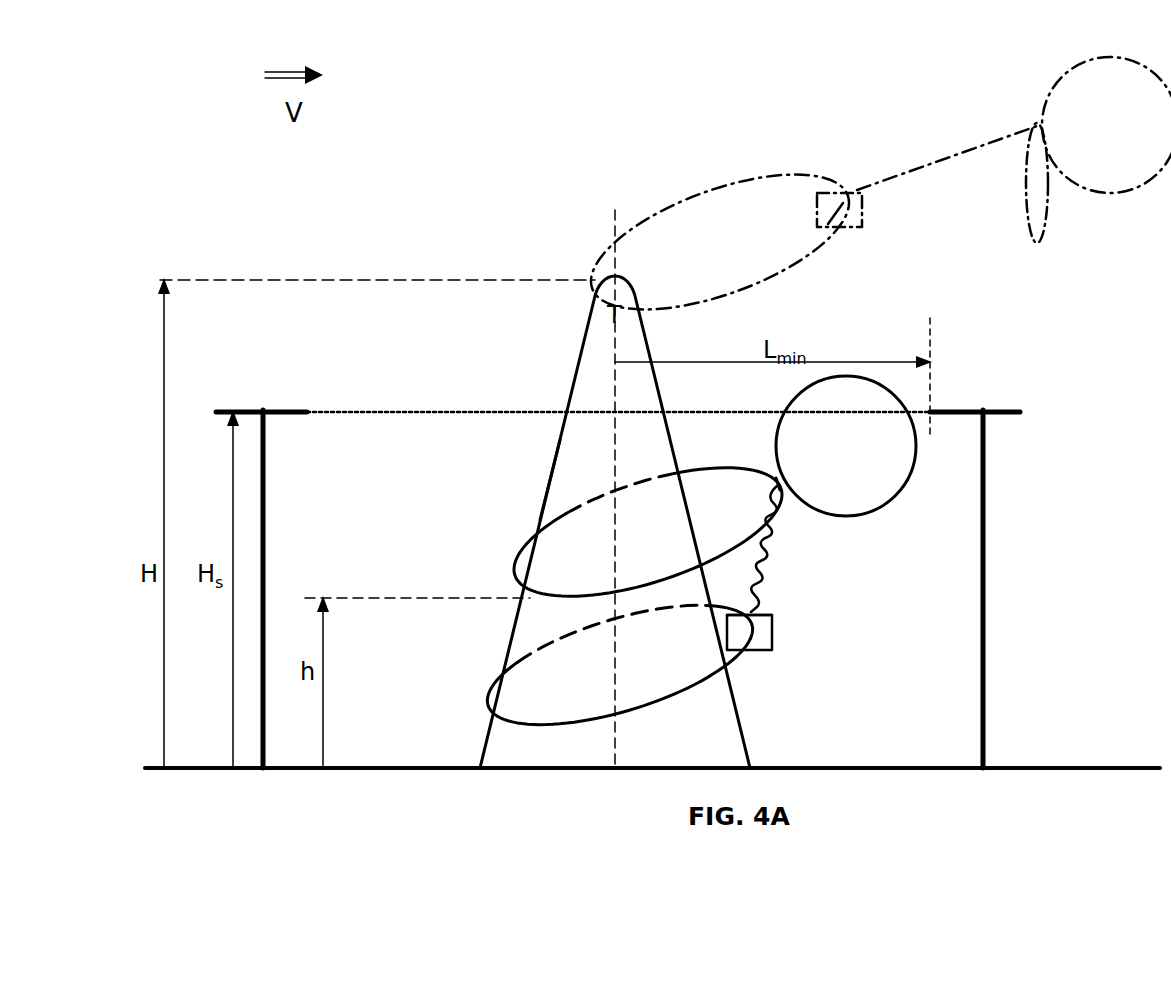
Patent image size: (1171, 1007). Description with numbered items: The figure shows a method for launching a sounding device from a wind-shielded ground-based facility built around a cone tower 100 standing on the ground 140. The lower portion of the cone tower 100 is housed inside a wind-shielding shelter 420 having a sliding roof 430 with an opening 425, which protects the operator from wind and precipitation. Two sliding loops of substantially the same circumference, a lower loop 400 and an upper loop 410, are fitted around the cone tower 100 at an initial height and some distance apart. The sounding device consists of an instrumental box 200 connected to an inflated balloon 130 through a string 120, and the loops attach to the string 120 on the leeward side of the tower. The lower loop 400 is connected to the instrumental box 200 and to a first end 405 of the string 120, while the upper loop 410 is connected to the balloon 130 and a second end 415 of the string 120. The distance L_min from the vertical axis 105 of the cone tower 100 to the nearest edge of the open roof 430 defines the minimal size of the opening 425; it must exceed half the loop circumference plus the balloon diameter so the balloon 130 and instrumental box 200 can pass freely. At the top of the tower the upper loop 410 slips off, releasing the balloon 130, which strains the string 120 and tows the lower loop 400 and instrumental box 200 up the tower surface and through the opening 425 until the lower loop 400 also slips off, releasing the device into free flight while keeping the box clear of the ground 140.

The cone tower 100 is at (705, 728).
The vertical axis 105 is at (607, 453).
The string 120 is at (780, 545).
The inflated balloon 130 is at (870, 470).
The ground 140 is at (1043, 765).
The instrumental box 200 is at (773, 635).
The lower loop 400 is at (500, 735).
The first end of the string 405 is at (762, 612).
The upper loop 410 is at (517, 558).
The second end of the string 415 is at (778, 482).
The wind-shielding shelter 420 is at (985, 575).
The opening 425 is at (425, 413).
The sliding roof 430 is at (1020, 413).